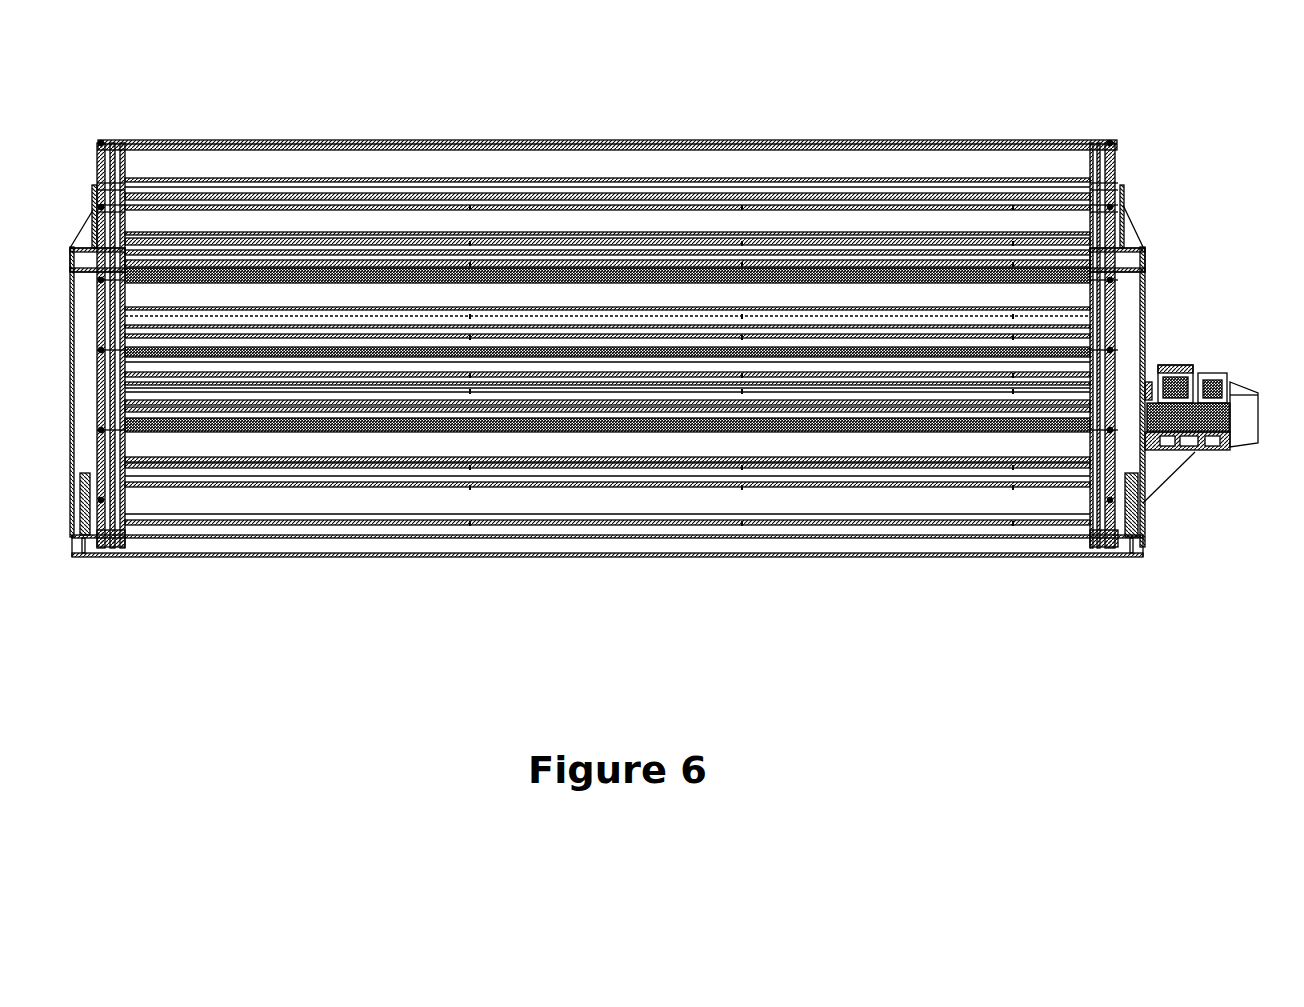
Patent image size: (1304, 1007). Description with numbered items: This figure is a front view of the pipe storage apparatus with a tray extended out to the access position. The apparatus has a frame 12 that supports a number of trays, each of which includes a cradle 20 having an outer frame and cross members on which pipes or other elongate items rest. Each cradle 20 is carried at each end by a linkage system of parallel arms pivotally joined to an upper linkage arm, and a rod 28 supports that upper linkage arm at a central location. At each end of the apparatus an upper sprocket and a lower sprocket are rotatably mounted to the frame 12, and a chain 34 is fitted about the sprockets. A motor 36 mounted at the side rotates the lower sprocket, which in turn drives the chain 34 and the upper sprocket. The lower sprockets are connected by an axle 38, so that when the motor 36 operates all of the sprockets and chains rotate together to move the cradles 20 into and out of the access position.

The frame 12 is at (1130, 330).
The cradle 20 is at (922, 518).
The rod 28 is at (1055, 150).
The chain 34 is at (1115, 180).
The motor 36 is at (1245, 415).
The axle 38 is at (343, 413).